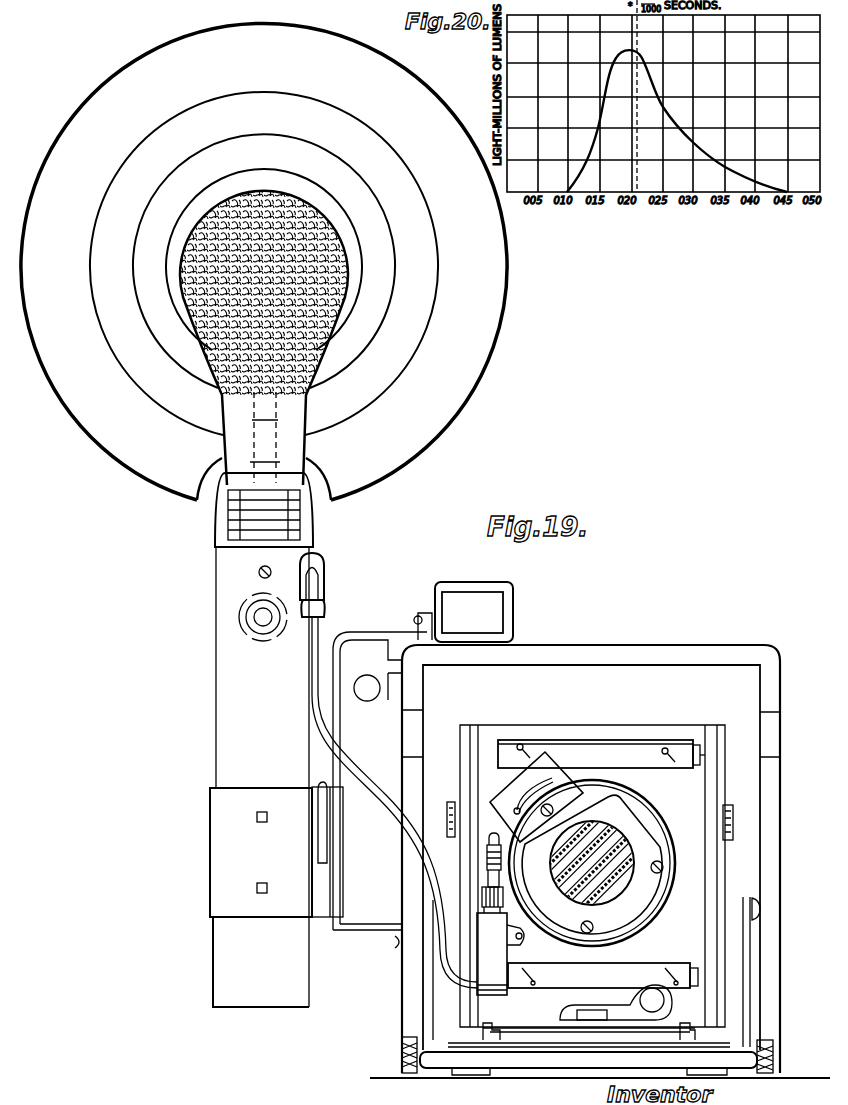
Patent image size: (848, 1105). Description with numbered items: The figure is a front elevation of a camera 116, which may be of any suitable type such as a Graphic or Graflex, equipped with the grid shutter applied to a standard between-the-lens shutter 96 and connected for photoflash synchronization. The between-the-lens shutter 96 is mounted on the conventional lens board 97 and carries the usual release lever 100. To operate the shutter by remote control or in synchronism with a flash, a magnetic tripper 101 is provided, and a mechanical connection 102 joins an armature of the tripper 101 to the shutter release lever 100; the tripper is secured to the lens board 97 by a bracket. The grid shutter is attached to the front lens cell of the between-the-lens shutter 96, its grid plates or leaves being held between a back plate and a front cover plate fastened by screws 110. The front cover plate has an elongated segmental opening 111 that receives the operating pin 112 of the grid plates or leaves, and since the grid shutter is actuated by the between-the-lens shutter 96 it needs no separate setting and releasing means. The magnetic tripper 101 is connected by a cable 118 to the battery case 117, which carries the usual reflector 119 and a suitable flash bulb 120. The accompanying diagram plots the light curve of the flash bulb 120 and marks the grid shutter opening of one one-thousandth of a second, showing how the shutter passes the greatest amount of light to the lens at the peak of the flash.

The between-the-lens shutter 96 is at (640, 824).
The lens board 97 is at (690, 873).
The release lever 100 is at (500, 838).
The magnetic tripper 101 is at (496, 955).
The mechanical connection 102 is at (487, 856).
The screws 110 is at (546, 817).
The elongated segmental opening 111 is at (553, 782).
The operating pin 112 is at (536, 797).
The camera 116 is at (722, 638).
The battery case 117 is at (223, 690).
The cable 118 is at (360, 772).
The reflector 119 is at (497, 290).
The flash bulb 120 is at (259, 188).